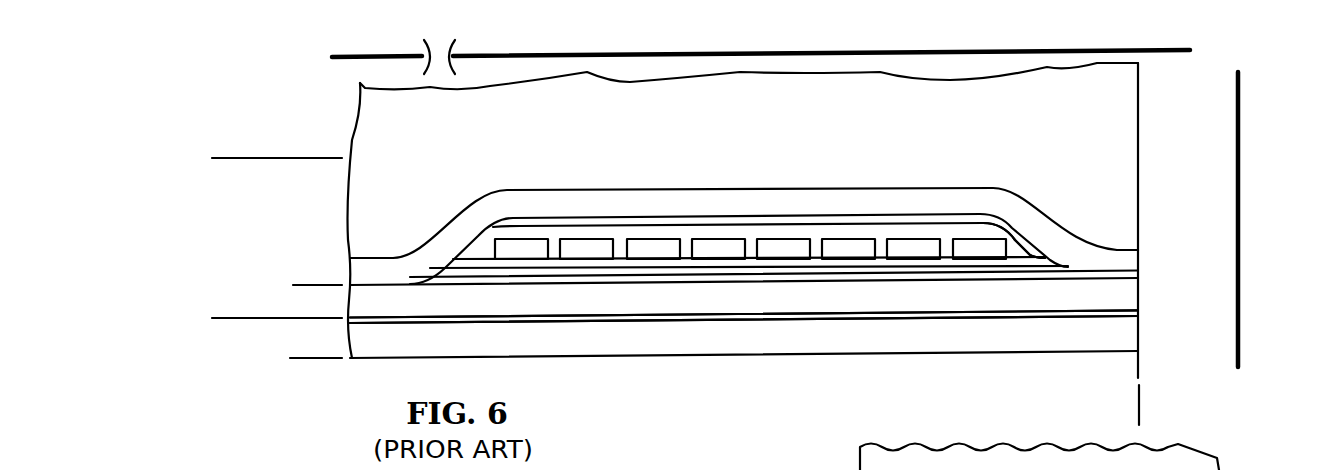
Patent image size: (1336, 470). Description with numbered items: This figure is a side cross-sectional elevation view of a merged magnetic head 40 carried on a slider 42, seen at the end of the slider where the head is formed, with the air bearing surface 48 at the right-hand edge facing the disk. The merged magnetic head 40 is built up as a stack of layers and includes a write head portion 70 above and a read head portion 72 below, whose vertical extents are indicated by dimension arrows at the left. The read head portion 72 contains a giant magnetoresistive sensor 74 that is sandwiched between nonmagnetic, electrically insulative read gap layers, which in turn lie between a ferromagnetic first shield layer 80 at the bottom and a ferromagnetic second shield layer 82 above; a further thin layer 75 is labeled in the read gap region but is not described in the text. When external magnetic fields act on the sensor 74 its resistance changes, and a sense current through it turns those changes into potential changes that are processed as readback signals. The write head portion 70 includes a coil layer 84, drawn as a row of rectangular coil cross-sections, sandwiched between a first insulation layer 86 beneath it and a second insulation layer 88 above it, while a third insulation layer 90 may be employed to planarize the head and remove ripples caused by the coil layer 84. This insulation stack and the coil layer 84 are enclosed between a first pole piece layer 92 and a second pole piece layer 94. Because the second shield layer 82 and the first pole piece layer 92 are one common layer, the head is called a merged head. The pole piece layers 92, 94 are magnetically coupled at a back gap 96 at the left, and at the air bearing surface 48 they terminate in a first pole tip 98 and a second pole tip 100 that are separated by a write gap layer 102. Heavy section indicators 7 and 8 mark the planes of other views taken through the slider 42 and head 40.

The section line 8- 8 is at (1173, 33).
The section line 7- 7 is at (1290, 348).
The magnetic head 40 is at (336, 85).
The slider 42 is at (1118, 97).
The write head portion 70 is at (309, 272).
The read head portion 72 is at (310, 374).
The back gap 96 is at (378, 284).
The second pole piece layer 94 is at (895, 189).
The third insulation layer 90 is at (520, 218).
The second insulation layer 88 is at (1022, 250).
The coil layer 84 is at (783, 247).
The first insulation layer 86 is at (599, 267).
The write gap layer 102 is at (1138, 272).
The second pole tip 100 is at (1133, 260).
The first pole tip 98 is at (1138, 292).
The second shield layer 82 is at (986, 297).
The first pole piece layer 92 is at (983, 385).
The read gap layer 75 is at (700, 320).
The GMR sensor 74 is at (1138, 317).
The first shield layer 80 is at (881, 342).
The air bearing surface 48 is at (1140, 386).